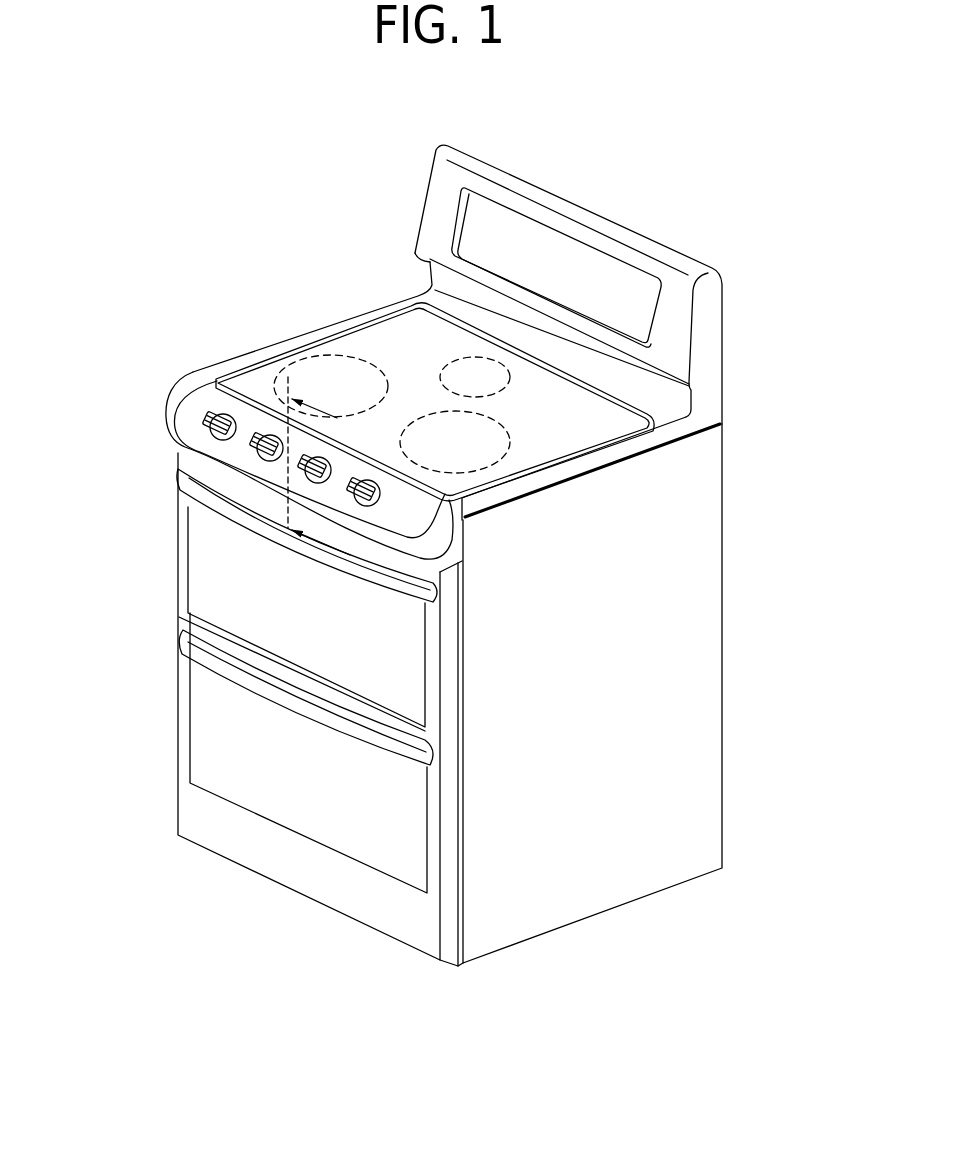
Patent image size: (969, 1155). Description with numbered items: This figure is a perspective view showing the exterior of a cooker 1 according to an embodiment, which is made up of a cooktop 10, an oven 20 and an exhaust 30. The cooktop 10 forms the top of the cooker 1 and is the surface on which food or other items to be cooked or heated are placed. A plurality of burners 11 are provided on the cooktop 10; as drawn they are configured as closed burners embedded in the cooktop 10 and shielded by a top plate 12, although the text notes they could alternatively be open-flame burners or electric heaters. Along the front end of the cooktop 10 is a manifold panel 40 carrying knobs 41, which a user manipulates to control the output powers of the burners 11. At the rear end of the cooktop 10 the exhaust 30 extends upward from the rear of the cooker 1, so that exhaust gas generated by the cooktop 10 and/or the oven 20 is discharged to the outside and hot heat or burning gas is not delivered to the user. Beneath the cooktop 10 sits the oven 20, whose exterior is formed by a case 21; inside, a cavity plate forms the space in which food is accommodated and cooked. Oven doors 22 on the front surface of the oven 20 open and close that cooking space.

The cooker 1 is at (264, 188).
The cooktop 10 is at (232, 360).
The burners 11 is at (336, 357).
The top plate 12 is at (652, 443).
The oven 20 is at (170, 715).
The case 21 is at (710, 802).
The oven doors 22 is at (415, 703).
The exhaust 30 is at (728, 304).
The manifold panel 40 is at (186, 430).
The knobs 41 is at (214, 410).